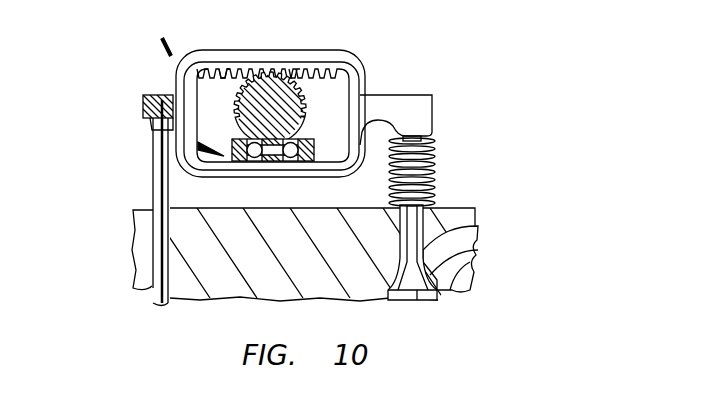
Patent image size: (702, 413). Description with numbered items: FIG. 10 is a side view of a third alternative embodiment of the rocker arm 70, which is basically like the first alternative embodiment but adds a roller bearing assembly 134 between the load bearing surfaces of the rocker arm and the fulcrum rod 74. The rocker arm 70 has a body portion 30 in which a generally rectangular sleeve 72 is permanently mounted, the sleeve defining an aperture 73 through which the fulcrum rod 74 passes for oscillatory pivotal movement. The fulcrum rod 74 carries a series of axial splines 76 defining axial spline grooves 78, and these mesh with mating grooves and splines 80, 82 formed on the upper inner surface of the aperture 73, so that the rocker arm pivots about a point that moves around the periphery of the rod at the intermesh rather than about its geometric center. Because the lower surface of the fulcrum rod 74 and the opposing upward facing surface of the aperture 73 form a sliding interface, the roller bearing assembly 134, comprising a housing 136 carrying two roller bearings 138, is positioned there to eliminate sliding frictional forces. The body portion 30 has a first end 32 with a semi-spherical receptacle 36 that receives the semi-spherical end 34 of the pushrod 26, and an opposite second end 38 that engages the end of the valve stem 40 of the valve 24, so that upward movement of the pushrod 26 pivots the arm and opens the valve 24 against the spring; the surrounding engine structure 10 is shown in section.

The base 10 is at (228, 217).
The valve 24 is at (424, 298).
The pushrod 26 is at (160, 240).
The body portion 30 is at (298, 50).
The first end 32 is at (145, 101).
The semi-spherical end 34 is at (156, 112).
The semi-spherical receptacle 36 is at (152, 127).
The second end 38 is at (432, 115).
The valve stem 40 is at (470, 238).
The rocker arm 70 is at (160, 33).
The sleeve 72 is at (366, 82).
The aperture 73 is at (322, 110).
The fulcrum rod 74 is at (268, 84).
The axial splines 76 is at (342, 95).
The axial spline grooves 78 is at (308, 86).
The grooves 80 is at (224, 76).
The splines 82 is at (203, 78).
The roller bearing assembly 134 is at (200, 146).
The housing 136 is at (337, 163).
The roller bearings 138 is at (250, 157).